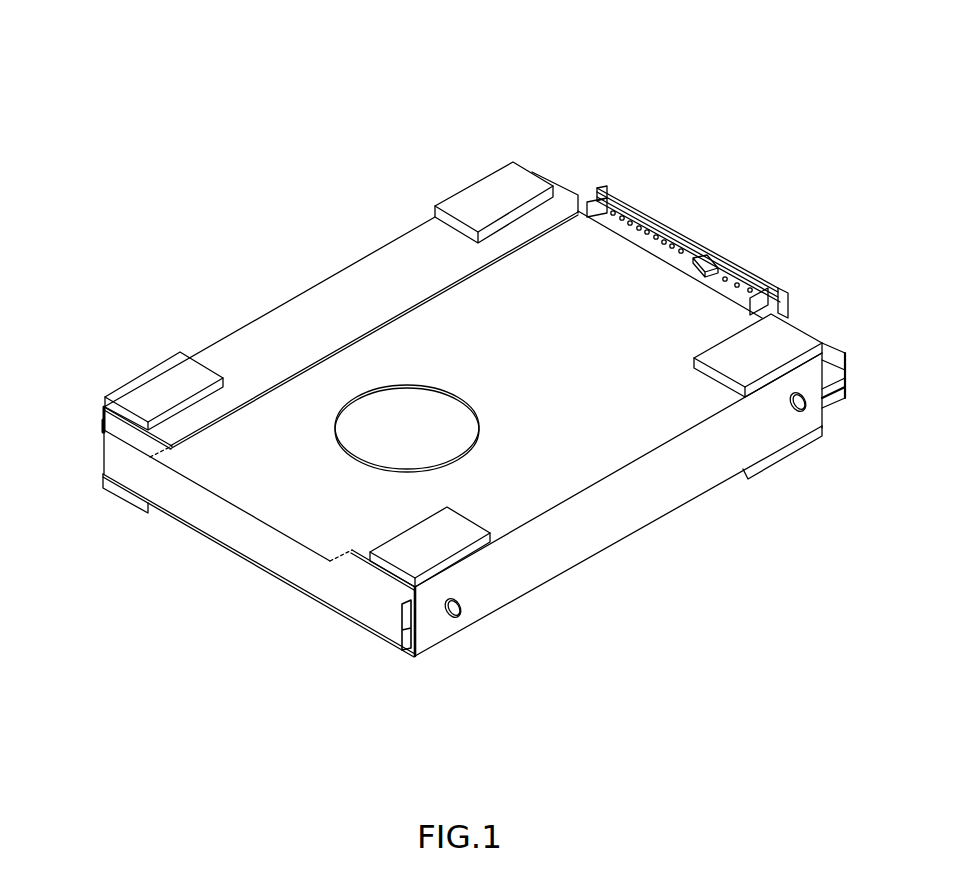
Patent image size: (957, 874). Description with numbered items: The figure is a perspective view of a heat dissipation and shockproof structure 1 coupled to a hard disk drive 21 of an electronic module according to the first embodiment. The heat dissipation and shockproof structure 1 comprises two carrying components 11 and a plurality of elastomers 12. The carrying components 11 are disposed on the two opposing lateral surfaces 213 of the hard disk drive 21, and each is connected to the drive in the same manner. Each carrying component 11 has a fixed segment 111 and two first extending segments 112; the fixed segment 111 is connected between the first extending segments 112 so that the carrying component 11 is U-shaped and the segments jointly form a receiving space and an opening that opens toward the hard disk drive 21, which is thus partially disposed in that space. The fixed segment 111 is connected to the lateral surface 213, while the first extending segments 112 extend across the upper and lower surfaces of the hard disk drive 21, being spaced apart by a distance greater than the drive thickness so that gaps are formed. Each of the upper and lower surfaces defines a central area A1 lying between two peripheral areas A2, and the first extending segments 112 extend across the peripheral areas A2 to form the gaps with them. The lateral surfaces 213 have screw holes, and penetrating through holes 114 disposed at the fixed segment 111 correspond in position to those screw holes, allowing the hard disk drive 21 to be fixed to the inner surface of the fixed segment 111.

The heat dissipation and shockproof structure 1 is at (357, 100).
The carrying component 11 is at (485, 424).
The fixed segment 111 is at (637, 487).
The first extending segment 112 is at (663, 423).
The penetrating through hole 114 is at (460, 613).
The elastomer 12 is at (727, 382).
The hard disk drive 21 is at (315, 435).
The lateral surface 213 is at (98, 452).
The central area A1 is at (245, 497).
The peripheral area A2 is at (130, 438).